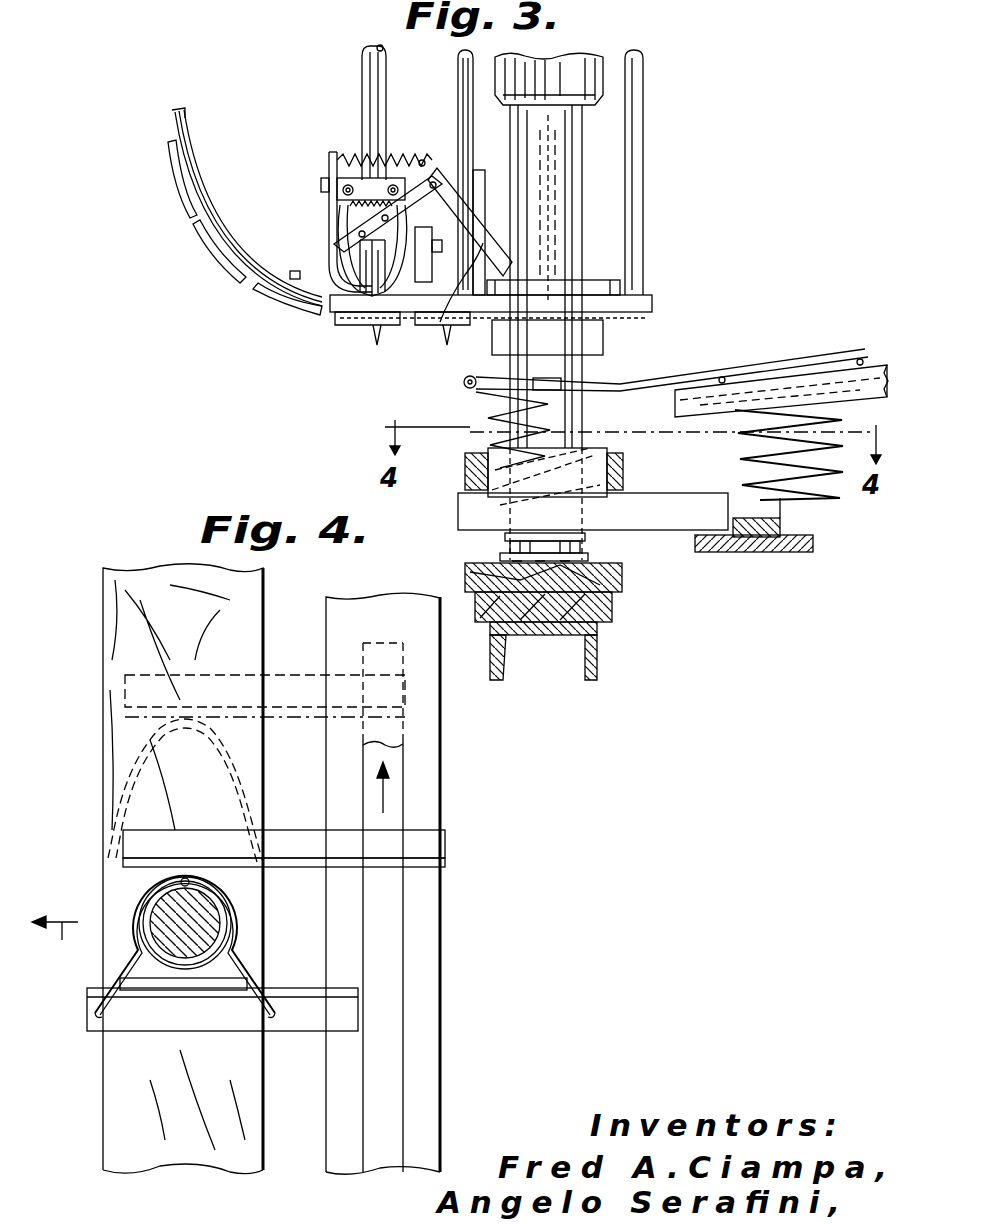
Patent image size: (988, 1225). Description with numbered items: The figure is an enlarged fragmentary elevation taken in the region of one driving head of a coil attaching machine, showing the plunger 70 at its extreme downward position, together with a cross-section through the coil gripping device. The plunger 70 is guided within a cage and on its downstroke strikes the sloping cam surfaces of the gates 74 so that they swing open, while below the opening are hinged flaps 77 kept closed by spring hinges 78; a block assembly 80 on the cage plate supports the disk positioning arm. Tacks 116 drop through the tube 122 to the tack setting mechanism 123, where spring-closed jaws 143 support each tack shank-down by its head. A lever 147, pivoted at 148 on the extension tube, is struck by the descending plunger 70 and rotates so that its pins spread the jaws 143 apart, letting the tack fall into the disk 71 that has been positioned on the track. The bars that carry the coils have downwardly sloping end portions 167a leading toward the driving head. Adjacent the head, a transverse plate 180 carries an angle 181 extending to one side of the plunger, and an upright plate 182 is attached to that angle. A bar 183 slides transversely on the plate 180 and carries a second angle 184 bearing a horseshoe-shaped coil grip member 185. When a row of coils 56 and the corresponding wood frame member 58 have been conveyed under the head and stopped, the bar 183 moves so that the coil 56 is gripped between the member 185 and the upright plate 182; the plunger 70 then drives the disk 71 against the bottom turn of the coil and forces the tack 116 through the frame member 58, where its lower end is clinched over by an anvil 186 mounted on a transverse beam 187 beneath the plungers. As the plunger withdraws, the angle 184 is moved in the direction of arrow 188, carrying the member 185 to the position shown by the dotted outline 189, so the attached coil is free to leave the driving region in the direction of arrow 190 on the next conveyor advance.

In FIG. 3, the coil 56 is at (505, 435).
In FIG. 4, the coil 56 is at (170, 968).
In FIG. 3, the rectangular border 58 is at (624, 584).
In FIG. 3, the plunger 70 is at (560, 177).
In FIG. 3, the disk 71 is at (510, 562).
In FIG. 3, the gates 74 is at (594, 286).
In FIG. 3, the hinged flaps 77 is at (592, 340).
In FIG. 3, the spring hinges 78 is at (640, 252).
In FIG. 3, the block assembly 80 is at (428, 316).
In FIG. 3, the tack 116 is at (470, 575).
In FIG. 3, the tube 122 is at (372, 90).
In FIG. 3, the tack setting mechanism 123 is at (317, 179).
In FIG. 3, the jaws 143 is at (365, 314).
In FIG. 3, the lever 147 is at (466, 300).
In FIG. 3, the pivot 148 is at (440, 180).
In FIG. 3, the downwardly sloping end portions 167a is at (780, 385).
In FIG. 3, the transverse plate 180 is at (790, 542).
In FIG. 3, the angle 181 is at (670, 520).
In FIG. 4, the angle 181 is at (300, 1022).
In FIG. 3, the upright plate 182 is at (595, 468).
In FIG. 4, the upright plate 182 is at (205, 985).
In FIG. 4, the bar 183 is at (388, 1027).
In FIG. 4, the angle 184 is at (286, 846).
In FIG. 3, the horseshoe-shaped coil grip member 185 is at (624, 476).
In FIG. 4, the horseshoe-shaped coil grip member 185 is at (245, 950).
In FIG. 3, the anvil 186 is at (614, 622).
In FIG. 3, the transverse beam 187 is at (598, 664).
In FIG. 4, the arrow 188 is at (390, 792).
In FIG. 4, the dotted outline 189 is at (238, 752).
In FIG. 4, the arrow 190 is at (460, 905).